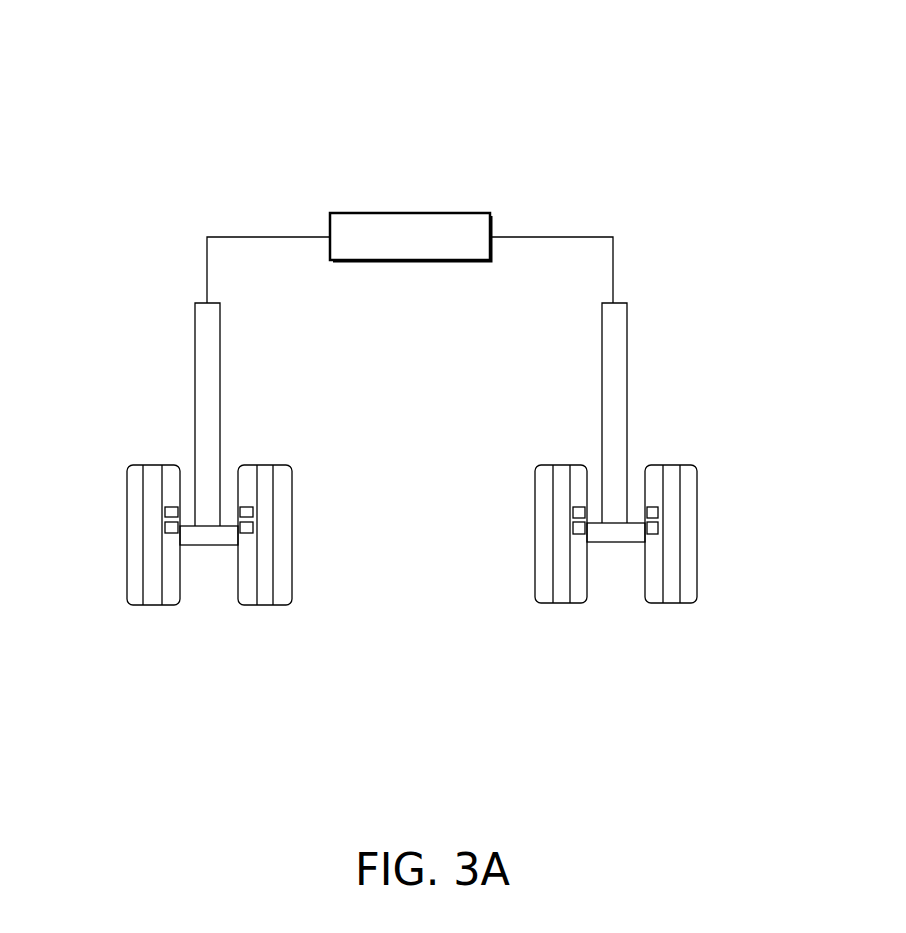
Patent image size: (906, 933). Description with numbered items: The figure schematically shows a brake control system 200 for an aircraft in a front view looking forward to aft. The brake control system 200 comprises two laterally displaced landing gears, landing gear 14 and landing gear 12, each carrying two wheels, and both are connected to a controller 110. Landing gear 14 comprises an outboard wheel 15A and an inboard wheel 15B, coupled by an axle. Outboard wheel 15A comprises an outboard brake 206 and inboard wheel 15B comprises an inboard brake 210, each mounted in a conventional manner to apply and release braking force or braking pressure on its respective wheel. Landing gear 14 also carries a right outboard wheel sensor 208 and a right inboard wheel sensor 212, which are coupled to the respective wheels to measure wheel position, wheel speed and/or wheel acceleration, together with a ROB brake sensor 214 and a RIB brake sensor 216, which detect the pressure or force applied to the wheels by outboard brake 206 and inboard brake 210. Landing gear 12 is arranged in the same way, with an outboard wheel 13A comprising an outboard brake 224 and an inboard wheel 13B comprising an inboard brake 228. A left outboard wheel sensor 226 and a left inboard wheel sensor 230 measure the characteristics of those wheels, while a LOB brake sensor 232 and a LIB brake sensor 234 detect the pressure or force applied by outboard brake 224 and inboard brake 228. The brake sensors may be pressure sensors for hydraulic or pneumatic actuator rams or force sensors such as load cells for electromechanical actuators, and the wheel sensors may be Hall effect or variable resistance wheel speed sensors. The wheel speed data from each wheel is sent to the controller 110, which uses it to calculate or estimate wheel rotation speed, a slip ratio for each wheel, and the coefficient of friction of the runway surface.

The brake control system 200 is at (157, 81).
The controller 110 is at (470, 213).
The landing gear 14 is at (131, 356).
The landing gear 12 is at (684, 339).
The outboard wheel 15A is at (126, 600).
The inboard wheel 15B is at (292, 600).
The outboard wheel 13A is at (700, 598).
The inboard wheel 13B is at (533, 598).
The outboard brake 206 is at (186, 546).
The inboard brake 210 is at (238, 546).
The right outboard (ROB) wheel sensor 208 is at (165, 510).
The right inboard (RIB) wheel sensor 212 is at (252, 510).
The ROB brake sensor 214 is at (165, 528).
The RIB brake sensor 216 is at (253, 530).
The inboard brake 228 is at (592, 543).
The outboard brake 224 is at (645, 543).
The left inboard (LIB) wheel sensor 230 is at (573, 510).
The left outboard (LOB) wheel sensor 226 is at (658, 510).
The LIB brake sensor 234 is at (573, 528).
The LOB brake sensor 232 is at (658, 530).